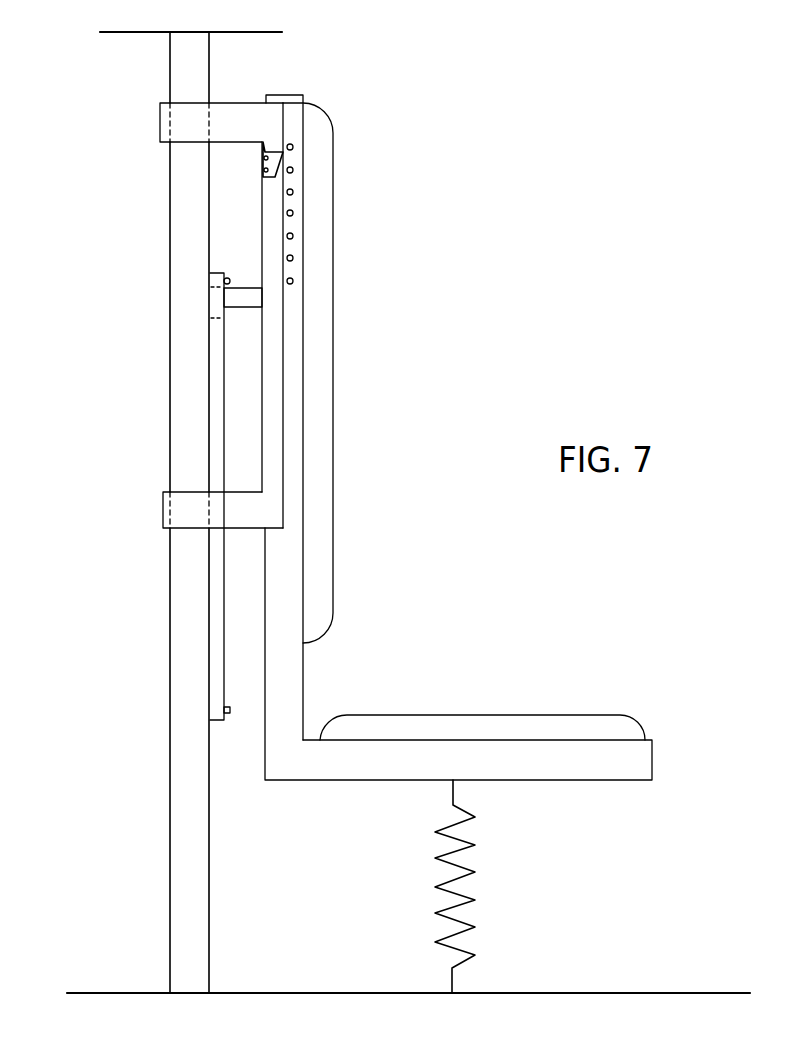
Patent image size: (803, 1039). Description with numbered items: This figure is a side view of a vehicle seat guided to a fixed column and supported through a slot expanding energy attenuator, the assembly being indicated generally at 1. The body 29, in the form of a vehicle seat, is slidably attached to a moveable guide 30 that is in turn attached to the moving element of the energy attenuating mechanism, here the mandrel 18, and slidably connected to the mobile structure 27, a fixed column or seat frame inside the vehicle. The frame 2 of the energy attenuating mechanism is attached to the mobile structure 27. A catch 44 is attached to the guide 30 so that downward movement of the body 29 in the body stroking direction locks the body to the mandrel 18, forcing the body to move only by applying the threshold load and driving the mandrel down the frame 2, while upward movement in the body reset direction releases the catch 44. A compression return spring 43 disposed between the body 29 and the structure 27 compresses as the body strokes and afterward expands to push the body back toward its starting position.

The seat assembly 1 is at (135, 329).
The frame 2 is at (224, 565).
The mandrel 18 is at (243, 296).
The mobile structure 27 is at (170, 655).
The body 29 is at (330, 363).
The moveable guide 30 is at (262, 448).
The compression return spring 43 is at (522, 887).
The catch 44 is at (278, 152).